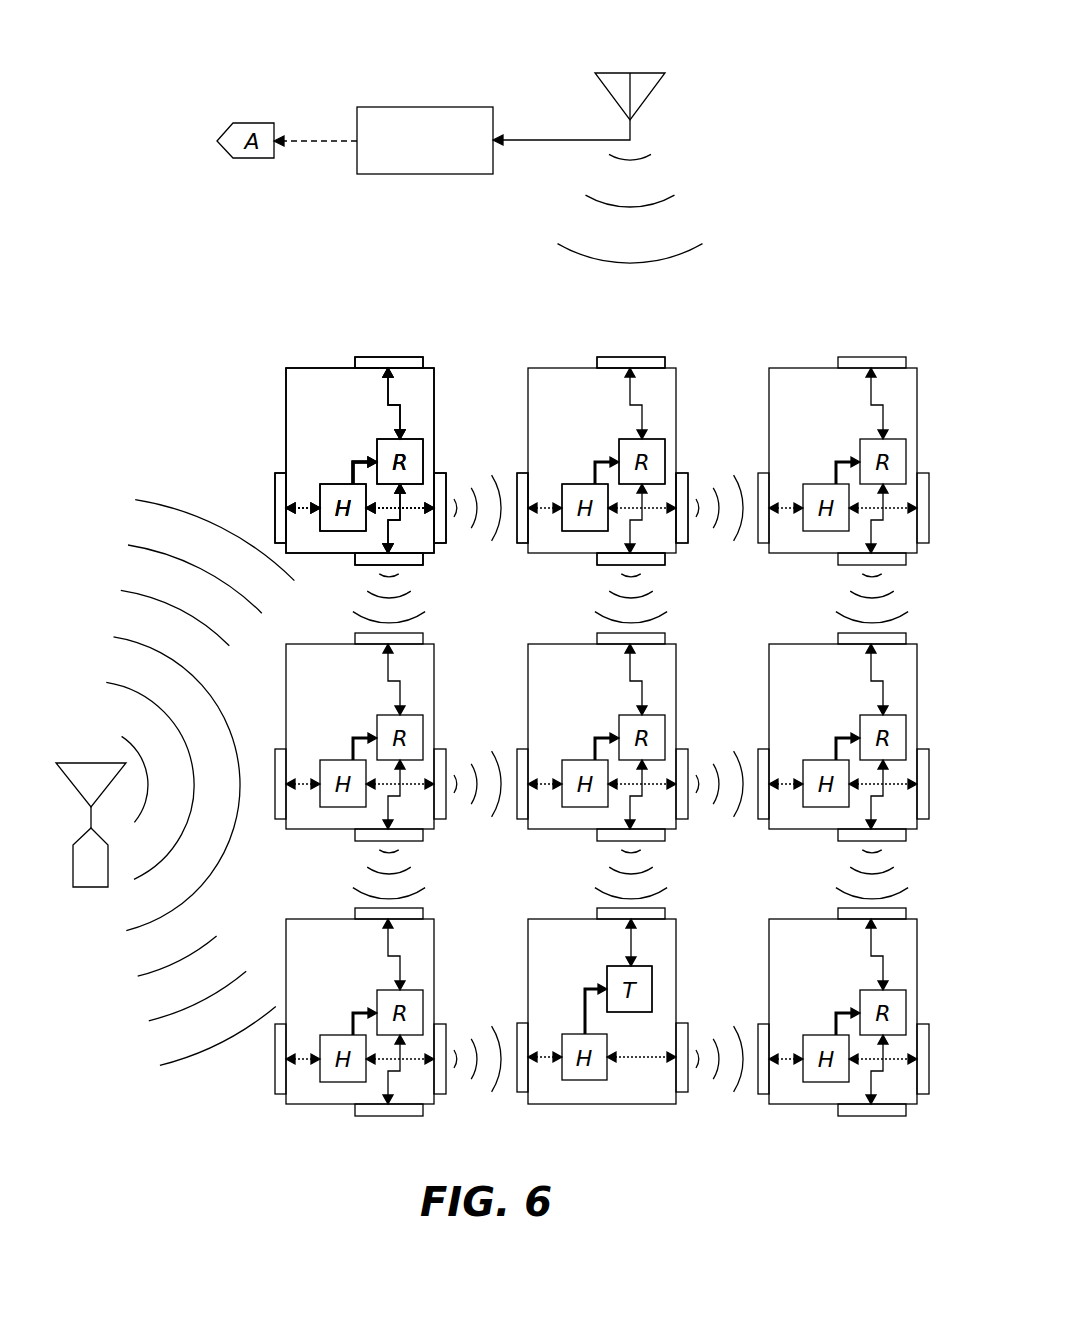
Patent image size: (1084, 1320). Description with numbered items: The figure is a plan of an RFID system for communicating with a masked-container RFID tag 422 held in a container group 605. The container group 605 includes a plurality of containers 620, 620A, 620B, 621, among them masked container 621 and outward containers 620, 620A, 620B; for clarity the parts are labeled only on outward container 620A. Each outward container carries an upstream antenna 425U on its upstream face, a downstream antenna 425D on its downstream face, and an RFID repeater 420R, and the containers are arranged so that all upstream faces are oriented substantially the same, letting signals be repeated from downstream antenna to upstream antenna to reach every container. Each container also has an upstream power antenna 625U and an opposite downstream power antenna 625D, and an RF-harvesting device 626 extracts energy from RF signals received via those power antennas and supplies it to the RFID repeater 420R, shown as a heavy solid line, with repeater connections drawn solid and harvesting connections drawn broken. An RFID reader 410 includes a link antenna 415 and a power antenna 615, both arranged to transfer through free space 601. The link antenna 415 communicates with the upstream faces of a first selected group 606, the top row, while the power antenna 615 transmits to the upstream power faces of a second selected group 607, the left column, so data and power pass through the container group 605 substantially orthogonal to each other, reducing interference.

The RFID reader 410 is at (357, 118).
The link antenna 415 is at (630, 73).
The free space 601 is at (763, 221).
The container group 605 is at (187, 311).
The first selected group 606 is at (243, 427).
The second selected group 607 is at (365, 293).
The power antenna 615 is at (90, 763).
The outward container 620 is at (328, 368).
The outward container 620A is at (542, 369).
The outward container 620B is at (542, 644).
The masked container 621 is at (541, 919).
The RFID repeater 420R is at (631, 439).
The masked-container RFID tag 422 is at (607, 966).
The upstream antenna 425U is at (631, 357).
The downstream antenna 425D is at (597, 557).
The upstream power antenna 625U is at (515, 473).
The downstream power antenna 625D is at (688, 473).
The RF-harvesting device 626 is at (578, 484).